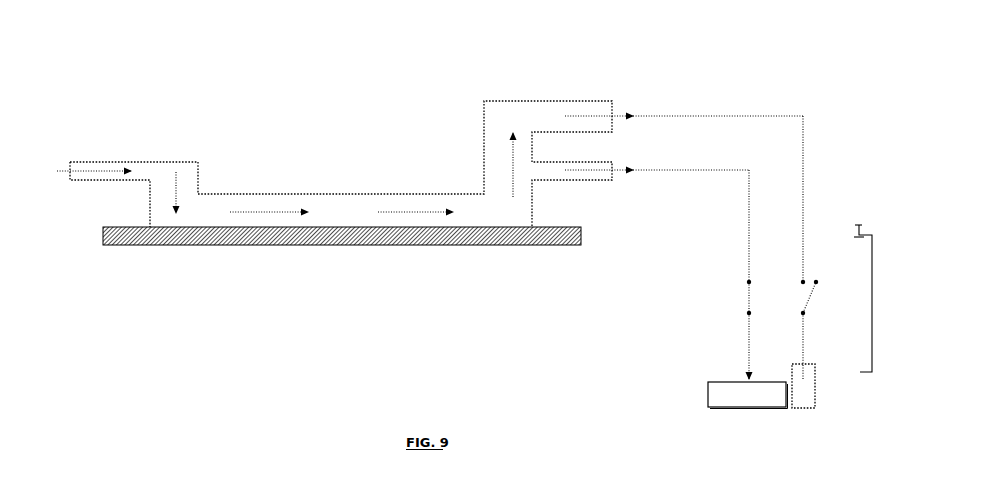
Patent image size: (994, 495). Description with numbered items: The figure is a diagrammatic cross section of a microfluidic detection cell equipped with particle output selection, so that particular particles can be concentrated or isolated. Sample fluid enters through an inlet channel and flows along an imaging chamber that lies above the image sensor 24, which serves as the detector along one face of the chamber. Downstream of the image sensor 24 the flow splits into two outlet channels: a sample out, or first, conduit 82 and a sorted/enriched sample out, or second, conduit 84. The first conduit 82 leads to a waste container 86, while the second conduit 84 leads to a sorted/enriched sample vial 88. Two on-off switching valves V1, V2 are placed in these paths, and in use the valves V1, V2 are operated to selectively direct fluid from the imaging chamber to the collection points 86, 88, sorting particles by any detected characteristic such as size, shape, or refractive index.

The image sensor 24 is at (287, 244).
The sample out conduit 82 is at (607, 182).
The sorted/enriched sample out conduit 84 is at (603, 100).
The waste container 86 is at (708, 394).
The sorted/enriched sample vial 88 is at (815, 395).
The first switchable valve V1 is at (749, 313).
The second switchable valve V2 is at (803, 313).